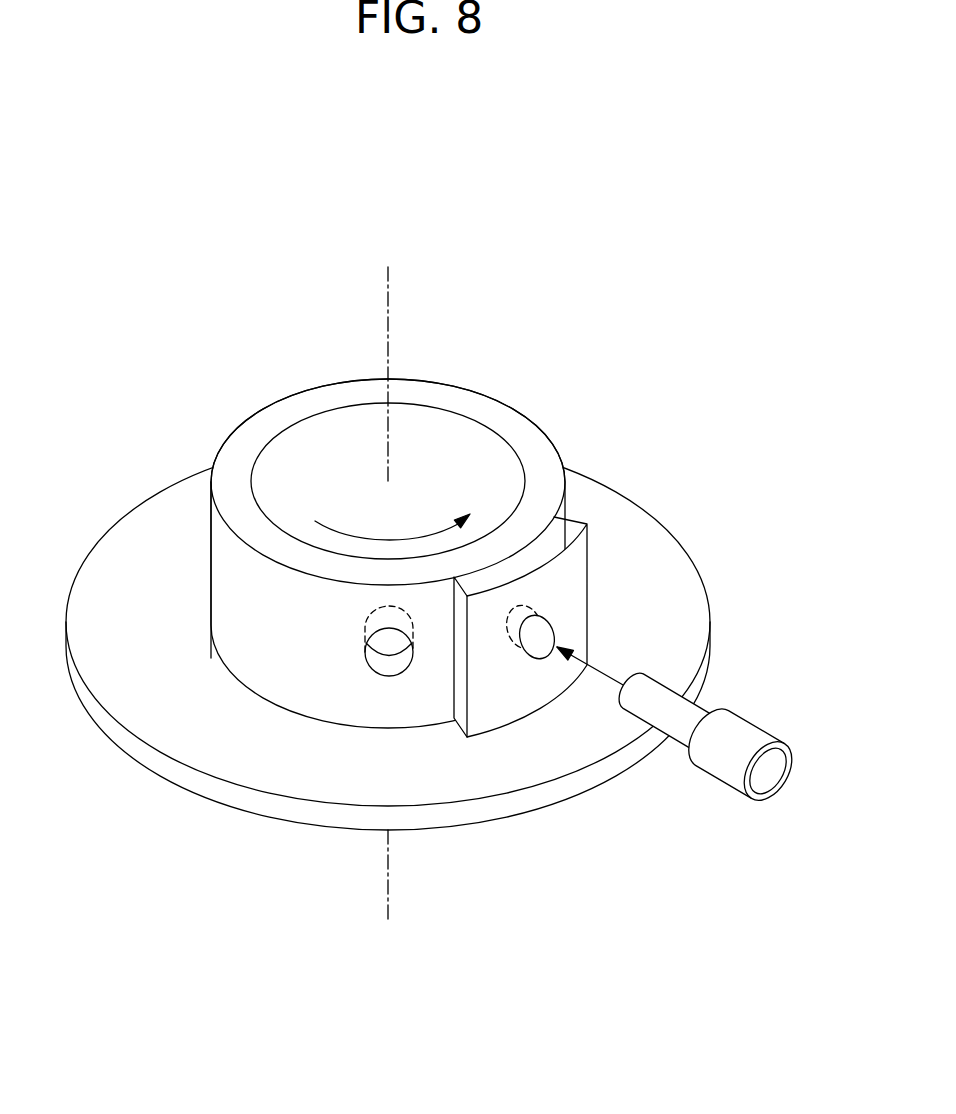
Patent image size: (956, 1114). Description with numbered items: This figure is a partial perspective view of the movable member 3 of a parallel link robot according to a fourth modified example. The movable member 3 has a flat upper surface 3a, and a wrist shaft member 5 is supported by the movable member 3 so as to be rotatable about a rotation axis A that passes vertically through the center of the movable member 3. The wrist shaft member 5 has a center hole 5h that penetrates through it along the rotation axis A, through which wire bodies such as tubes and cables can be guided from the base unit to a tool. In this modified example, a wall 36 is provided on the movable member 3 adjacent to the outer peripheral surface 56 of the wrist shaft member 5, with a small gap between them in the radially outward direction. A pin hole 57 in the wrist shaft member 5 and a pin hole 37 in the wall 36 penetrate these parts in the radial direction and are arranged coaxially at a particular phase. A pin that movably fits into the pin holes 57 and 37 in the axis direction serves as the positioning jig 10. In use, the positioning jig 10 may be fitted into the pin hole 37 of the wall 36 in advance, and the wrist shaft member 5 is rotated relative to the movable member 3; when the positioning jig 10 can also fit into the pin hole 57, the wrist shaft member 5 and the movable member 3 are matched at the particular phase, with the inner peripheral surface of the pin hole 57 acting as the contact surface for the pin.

The movable member 3 is at (680, 542).
The upper surface 3a is at (218, 733).
The wrist shaft member 5 is at (495, 417).
The center hole 5h is at (278, 442).
The wall 36 is at (593, 552).
The pin hole 37 is at (548, 625).
The outer peripheral surface 56 is at (230, 572).
The pin hole 57 is at (380, 660).
The positioning jig 10 is at (755, 713).
The rotation axis A is at (388, 577).